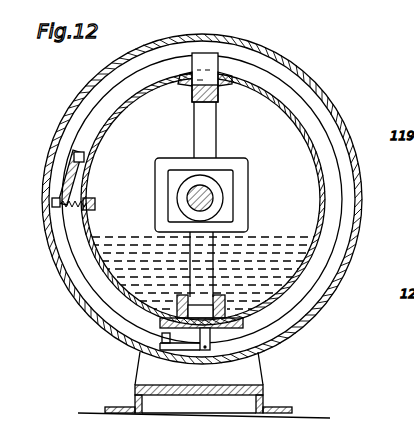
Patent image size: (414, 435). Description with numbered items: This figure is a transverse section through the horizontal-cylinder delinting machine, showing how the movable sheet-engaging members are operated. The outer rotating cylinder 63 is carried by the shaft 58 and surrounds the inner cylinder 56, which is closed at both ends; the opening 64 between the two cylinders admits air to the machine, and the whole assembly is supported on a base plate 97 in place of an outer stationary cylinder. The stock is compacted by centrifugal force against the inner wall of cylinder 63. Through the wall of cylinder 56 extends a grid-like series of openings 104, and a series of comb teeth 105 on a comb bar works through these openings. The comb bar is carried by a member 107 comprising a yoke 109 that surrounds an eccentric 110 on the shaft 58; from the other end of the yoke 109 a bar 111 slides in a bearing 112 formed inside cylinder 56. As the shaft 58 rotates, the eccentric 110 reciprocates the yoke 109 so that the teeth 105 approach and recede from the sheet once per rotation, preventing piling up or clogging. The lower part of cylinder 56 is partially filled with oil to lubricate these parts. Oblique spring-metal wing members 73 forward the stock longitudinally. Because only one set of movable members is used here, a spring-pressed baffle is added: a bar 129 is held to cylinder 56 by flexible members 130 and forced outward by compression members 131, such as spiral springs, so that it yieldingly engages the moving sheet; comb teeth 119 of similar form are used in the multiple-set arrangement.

The cylinder 63 is at (315, 93).
The opening 64 is at (113, 97).
The cylinder 56 is at (310, 147).
The comb teeth 105 is at (204, 55).
The openings 104 is at (222, 73).
The member 107 is at (212, 135).
The yoke 109 is at (240, 173).
The eccentric 110 is at (187, 187).
The shaft 58 is at (208, 204).
The bar 111 is at (235, 248).
The bearing 112 is at (243, 314).
The wing members 73 is at (170, 345).
The base plate 97 is at (228, 388).
The flexible members 130 is at (82, 185).
The compression members 131 is at (75, 218).
The bar 129 is at (53, 206).
The comb teeth 119 is at (402, 135).